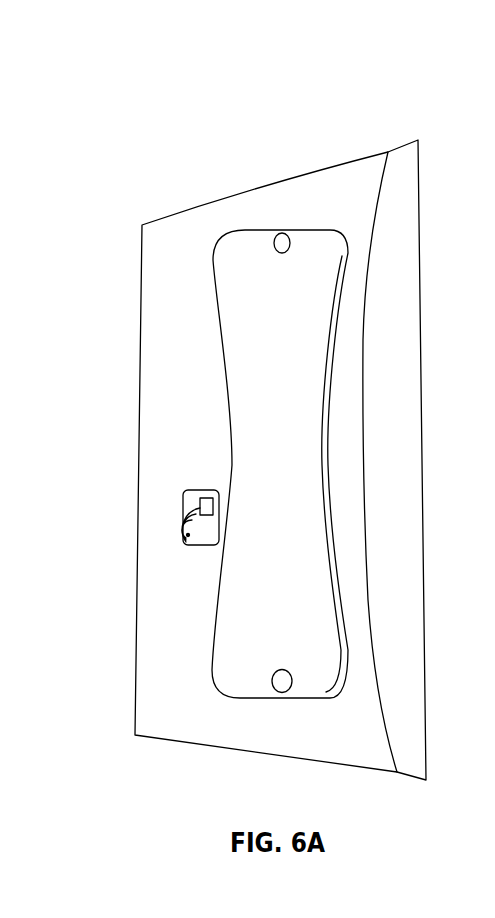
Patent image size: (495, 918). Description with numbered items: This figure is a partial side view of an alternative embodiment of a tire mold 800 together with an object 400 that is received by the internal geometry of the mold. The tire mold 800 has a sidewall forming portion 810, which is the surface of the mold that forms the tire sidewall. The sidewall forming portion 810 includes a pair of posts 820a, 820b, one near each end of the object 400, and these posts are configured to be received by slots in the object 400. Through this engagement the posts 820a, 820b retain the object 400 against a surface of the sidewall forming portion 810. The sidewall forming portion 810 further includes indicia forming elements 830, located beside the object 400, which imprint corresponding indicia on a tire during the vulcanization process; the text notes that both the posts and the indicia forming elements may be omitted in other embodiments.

The tire mold 800 is at (88, 118).
The sidewall forming portion 810 is at (168, 260).
The object 400 is at (308, 273).
The post 820a is at (281, 232).
The post 820b is at (282, 694).
The indicia forming elements 830 is at (162, 465).